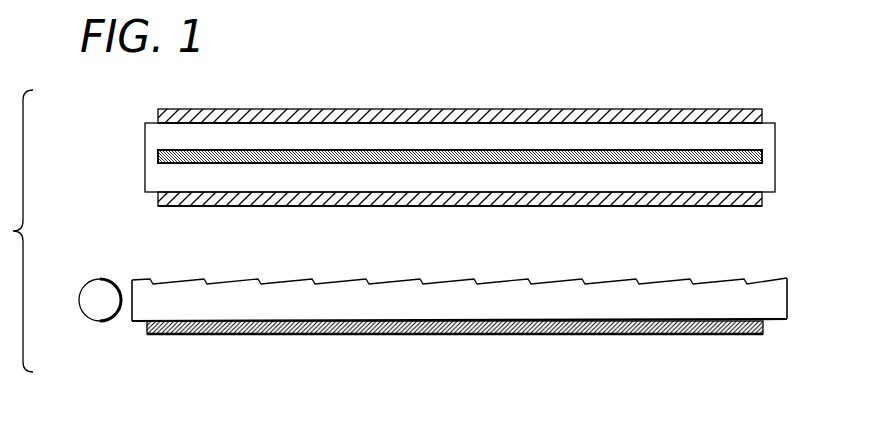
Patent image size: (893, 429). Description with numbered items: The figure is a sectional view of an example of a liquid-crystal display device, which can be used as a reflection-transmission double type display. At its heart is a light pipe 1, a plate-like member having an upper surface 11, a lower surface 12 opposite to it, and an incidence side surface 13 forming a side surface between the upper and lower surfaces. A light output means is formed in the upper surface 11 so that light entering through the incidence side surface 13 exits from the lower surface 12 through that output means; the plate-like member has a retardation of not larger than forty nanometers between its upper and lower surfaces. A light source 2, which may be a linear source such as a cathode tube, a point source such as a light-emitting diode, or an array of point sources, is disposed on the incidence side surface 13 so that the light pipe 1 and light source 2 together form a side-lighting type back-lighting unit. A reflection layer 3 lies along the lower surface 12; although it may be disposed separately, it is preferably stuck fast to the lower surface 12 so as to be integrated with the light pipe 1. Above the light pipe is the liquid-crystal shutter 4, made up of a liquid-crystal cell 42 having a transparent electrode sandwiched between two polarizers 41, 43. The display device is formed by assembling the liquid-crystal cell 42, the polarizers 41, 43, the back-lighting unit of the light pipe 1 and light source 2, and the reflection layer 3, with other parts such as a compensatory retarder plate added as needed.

The light pipe 1 is at (469, 299).
The light source 2 is at (84, 316).
The reflection layer 3 is at (725, 337).
The liquid-crystal shutter 4 is at (509, 197).
The upper surface of the light pipe 11 is at (550, 279).
The lower surface 12 is at (787, 320).
The incidence side surface 13 is at (132, 318).
The polarizer 41 is at (770, 110).
The liquid-crystal cell 42 is at (775, 137).
The polarizer 43 is at (498, 207).